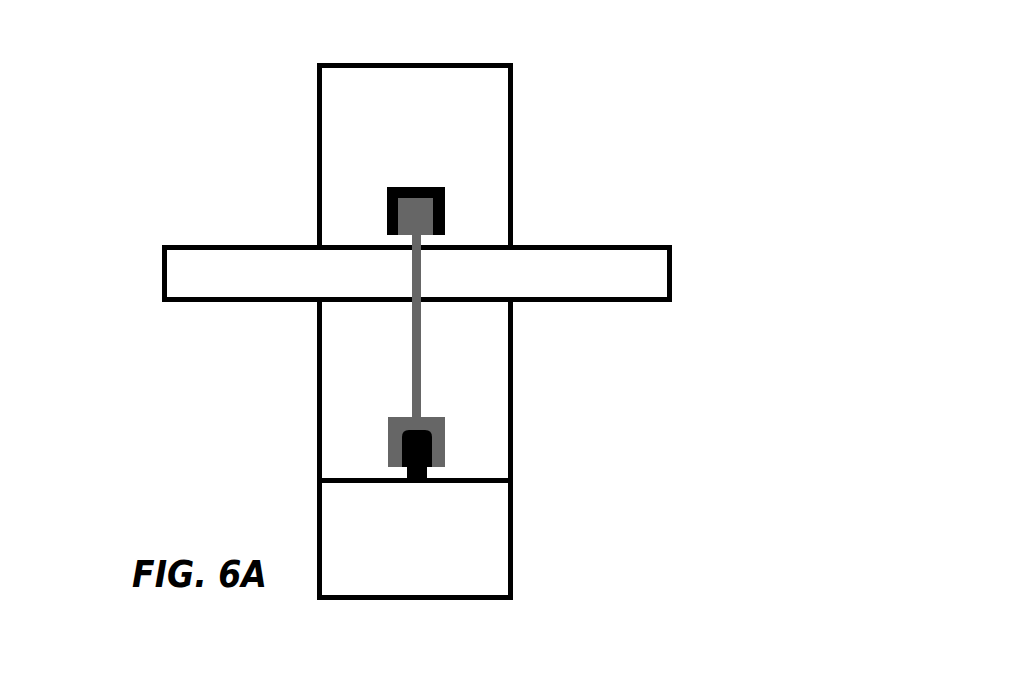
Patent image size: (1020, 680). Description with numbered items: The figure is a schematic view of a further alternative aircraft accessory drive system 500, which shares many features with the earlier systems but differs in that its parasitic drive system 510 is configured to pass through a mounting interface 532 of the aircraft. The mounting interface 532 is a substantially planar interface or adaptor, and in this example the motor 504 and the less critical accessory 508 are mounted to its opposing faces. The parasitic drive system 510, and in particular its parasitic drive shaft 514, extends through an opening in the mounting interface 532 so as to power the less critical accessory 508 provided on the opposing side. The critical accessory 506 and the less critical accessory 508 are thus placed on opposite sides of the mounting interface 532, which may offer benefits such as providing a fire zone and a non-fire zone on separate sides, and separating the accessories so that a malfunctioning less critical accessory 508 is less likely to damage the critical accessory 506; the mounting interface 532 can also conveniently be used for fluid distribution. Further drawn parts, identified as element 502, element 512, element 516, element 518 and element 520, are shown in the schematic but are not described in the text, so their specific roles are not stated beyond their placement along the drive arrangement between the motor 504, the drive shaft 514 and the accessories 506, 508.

The aircraft accessory drive system 500 is at (630, 80).
The separator plate 502 is at (430, 470).
The motor 504 is at (485, 555).
The critical accessory 506 is at (478, 396).
The less critical accessory 508 is at (353, 105).
The parasitic drive system 510 is at (420, 273).
The shaft passage 512 is at (425, 243).
The parasitic drive shaft 514 is at (410, 338).
The plug 516 is at (430, 440).
The seal block 518 is at (390, 440).
The cap 520 is at (440, 213).
The mounting interface 532 is at (608, 276).